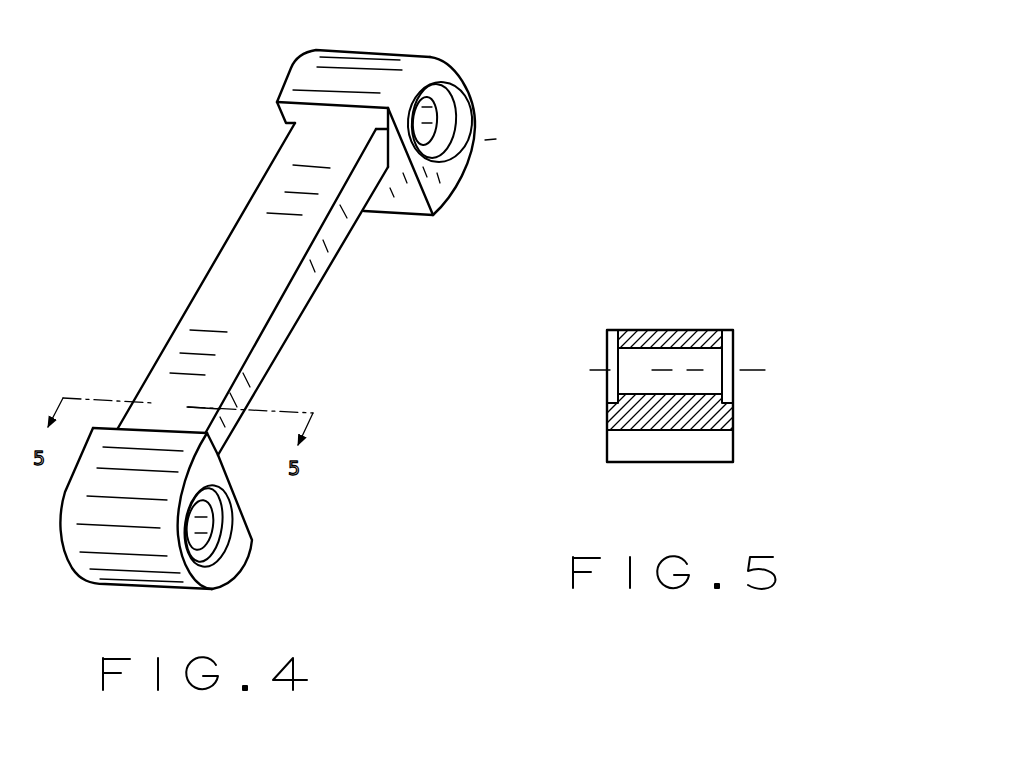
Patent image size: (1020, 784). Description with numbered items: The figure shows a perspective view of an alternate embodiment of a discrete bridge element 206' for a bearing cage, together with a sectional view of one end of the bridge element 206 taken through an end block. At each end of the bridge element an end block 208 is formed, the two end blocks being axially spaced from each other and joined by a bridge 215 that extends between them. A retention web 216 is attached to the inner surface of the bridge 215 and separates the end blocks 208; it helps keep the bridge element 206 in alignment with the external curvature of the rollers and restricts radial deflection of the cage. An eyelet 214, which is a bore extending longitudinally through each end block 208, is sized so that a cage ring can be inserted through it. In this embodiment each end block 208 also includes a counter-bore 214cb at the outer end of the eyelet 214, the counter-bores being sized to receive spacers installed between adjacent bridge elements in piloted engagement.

In FIG. 5, the bridge element 206 is at (628, 411).
In FIG. 4, the bridge element 206' is at (244, 289).
In FIG. 4, the end block 208 is at (373, 52).
In FIG. 5, the end block 208 is at (679, 330).
In FIG. 4, the eyelet 214 is at (427, 122).
In FIG. 5, the eyelet 214 is at (712, 363).
In FIG. 4, the counter-bore 214cb is at (450, 138).
In FIG. 5, the counter-bore 214cb is at (731, 403).
In FIG. 4, the bridge 215 is at (262, 293).
In FIG. 4, the retention web 216 is at (257, 354).